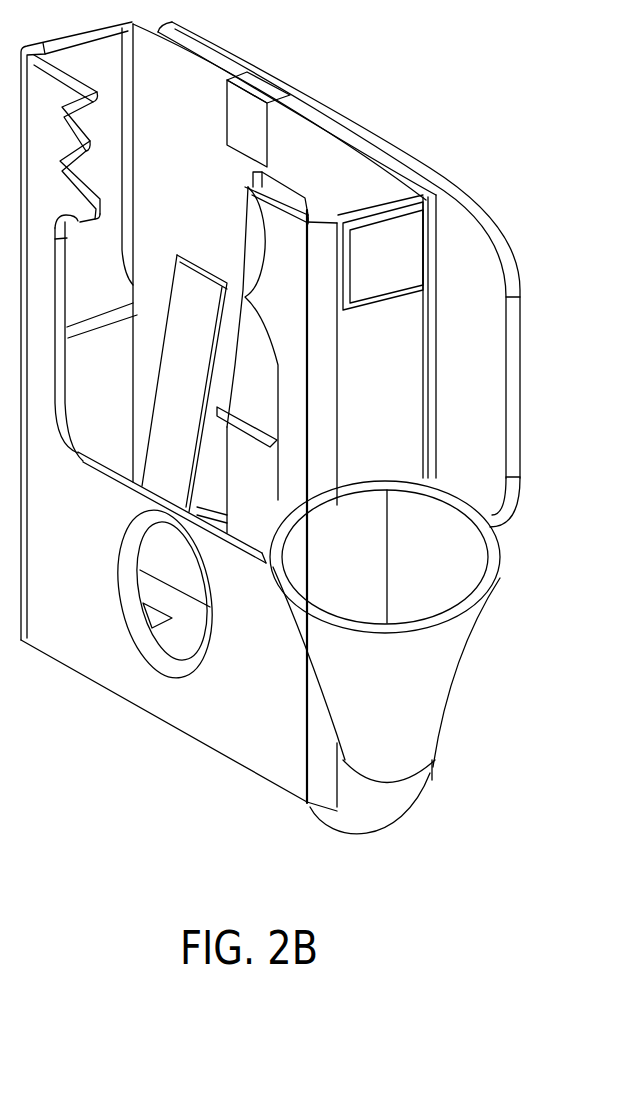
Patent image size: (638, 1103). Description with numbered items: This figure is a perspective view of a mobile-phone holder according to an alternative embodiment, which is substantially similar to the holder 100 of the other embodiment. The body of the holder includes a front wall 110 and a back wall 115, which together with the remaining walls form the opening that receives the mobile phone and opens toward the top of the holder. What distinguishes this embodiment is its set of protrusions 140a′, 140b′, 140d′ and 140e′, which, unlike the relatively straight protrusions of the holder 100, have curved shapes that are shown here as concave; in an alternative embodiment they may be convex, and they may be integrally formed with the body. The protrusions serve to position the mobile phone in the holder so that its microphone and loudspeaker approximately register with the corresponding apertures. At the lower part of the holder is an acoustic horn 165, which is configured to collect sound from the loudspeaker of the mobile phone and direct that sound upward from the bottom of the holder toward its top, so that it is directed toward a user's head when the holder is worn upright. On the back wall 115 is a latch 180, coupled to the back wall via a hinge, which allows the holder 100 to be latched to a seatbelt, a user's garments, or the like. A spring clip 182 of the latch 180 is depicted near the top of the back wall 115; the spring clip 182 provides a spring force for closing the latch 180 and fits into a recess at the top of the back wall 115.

The holder 100 is at (98, 802).
The front wall 110 is at (82, 524).
The back wall 115 is at (200, 137).
The protrusion 140a′ is at (200, 263).
The protrusion 140b′ is at (243, 435).
The protrusion 140d′ is at (383, 256).
The protrusion 140e′ is at (96, 338).
The acoustic horn 165 is at (447, 687).
The latch 180 is at (521, 293).
The spring clip 182 is at (270, 88).